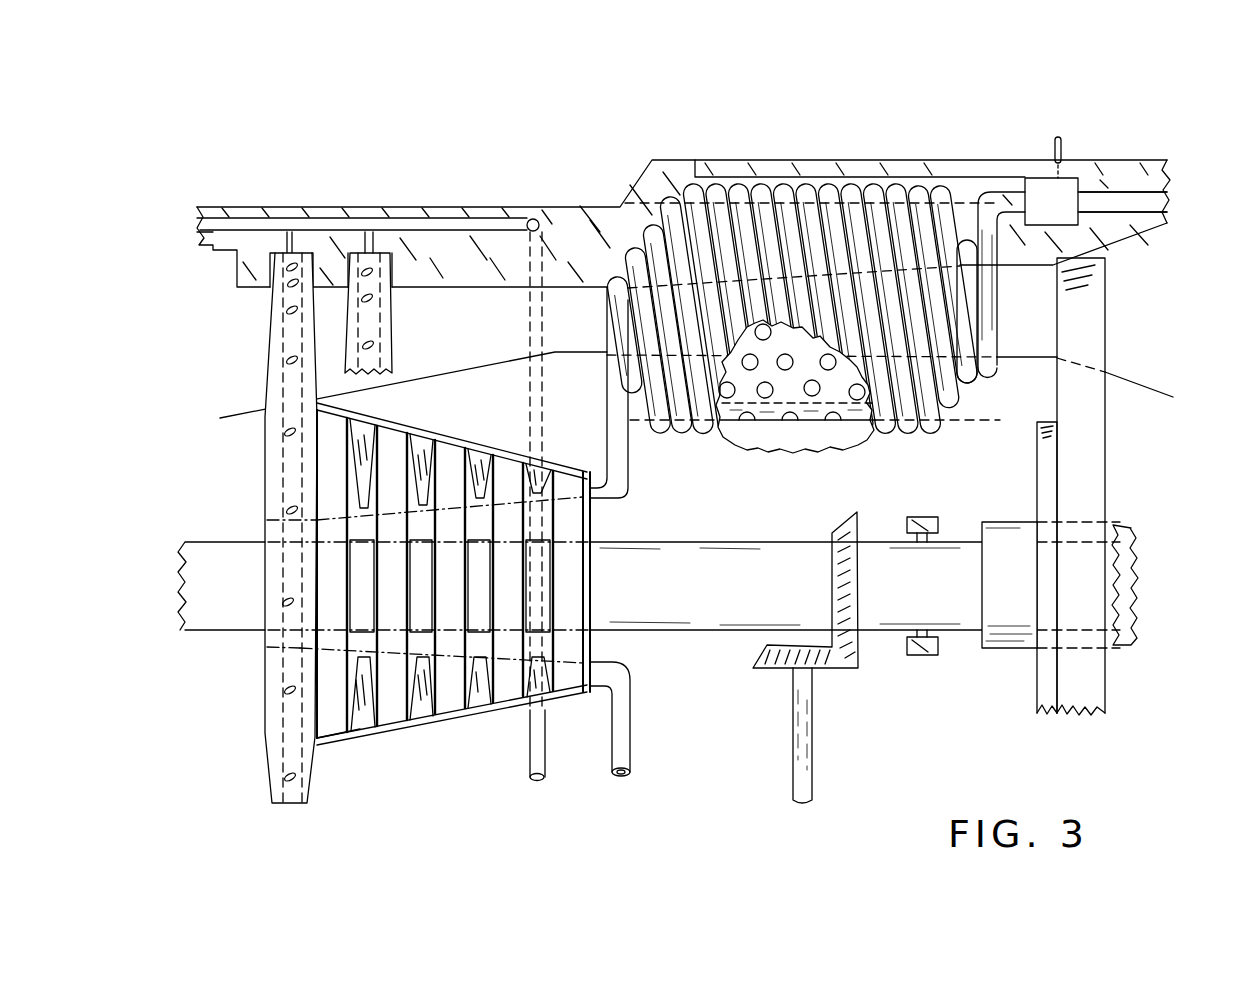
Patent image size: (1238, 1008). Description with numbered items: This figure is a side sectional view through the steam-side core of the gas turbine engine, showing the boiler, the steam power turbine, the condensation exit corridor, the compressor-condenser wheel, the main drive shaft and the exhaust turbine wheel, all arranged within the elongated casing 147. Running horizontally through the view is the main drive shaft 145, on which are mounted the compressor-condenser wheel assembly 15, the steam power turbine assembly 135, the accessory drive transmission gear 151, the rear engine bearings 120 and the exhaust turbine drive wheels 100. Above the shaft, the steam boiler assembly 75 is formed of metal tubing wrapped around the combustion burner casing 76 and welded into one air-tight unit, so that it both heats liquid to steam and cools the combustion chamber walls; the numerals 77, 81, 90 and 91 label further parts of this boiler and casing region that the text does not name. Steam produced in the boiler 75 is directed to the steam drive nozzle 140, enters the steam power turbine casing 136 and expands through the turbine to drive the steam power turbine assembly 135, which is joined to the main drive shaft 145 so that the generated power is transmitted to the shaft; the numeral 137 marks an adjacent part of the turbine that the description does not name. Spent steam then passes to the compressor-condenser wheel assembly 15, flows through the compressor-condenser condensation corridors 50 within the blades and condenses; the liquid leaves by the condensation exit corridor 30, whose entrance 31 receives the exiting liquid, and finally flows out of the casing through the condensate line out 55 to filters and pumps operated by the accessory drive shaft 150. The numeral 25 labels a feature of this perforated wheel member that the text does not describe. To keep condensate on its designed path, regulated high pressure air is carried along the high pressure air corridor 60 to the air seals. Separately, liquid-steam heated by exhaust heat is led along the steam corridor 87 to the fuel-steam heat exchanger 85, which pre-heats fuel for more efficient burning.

The compressor-condenser wheel assembly 15 is at (270, 360).
The holes 25 is at (285, 432).
The condensation exit corridor 30 is at (441, 225).
The entrance to the condensation exit corridor 31 is at (289, 232).
The compressor-condenser condensation corridors 50 is at (290, 718).
The condensate line out 55 is at (537, 781).
The high pressure air corridor 60 is at (600, 265).
The steam boiler assembly 75 is at (875, 237).
The combustion burner casing 76 is at (805, 358).
The pores 77 is at (750, 354).
The cylinder 81 is at (1018, 323).
The fuel-steam heat exchanger 85 is at (1067, 203).
The steam corridor 87 is at (1135, 205).
The probe 90 is at (1058, 137).
The outlet pipe 91 is at (957, 177).
The exhaust turbine drive wheels 100 is at (1080, 480).
The rear engine bearings 120 is at (925, 655).
The steam power turbine assembly 135 is at (445, 697).
The steam power turbine casing 136 is at (360, 720).
The cone bottom wall 137 is at (360, 727).
The steam drive nozzle 140 is at (596, 690).
The main drive shaft 145 is at (711, 588).
The elongated casing 147 is at (606, 243).
The accessory drive shaft 150 is at (806, 808).
The accessory drive transmission gear 151 is at (857, 670).